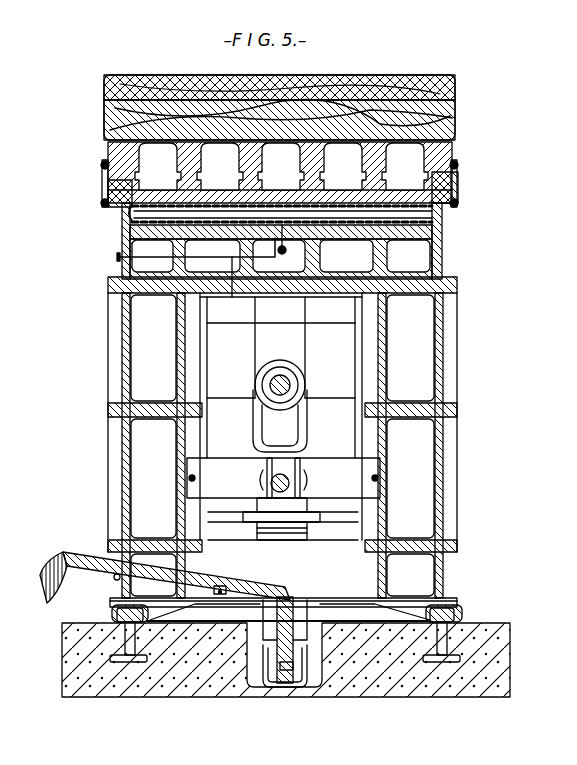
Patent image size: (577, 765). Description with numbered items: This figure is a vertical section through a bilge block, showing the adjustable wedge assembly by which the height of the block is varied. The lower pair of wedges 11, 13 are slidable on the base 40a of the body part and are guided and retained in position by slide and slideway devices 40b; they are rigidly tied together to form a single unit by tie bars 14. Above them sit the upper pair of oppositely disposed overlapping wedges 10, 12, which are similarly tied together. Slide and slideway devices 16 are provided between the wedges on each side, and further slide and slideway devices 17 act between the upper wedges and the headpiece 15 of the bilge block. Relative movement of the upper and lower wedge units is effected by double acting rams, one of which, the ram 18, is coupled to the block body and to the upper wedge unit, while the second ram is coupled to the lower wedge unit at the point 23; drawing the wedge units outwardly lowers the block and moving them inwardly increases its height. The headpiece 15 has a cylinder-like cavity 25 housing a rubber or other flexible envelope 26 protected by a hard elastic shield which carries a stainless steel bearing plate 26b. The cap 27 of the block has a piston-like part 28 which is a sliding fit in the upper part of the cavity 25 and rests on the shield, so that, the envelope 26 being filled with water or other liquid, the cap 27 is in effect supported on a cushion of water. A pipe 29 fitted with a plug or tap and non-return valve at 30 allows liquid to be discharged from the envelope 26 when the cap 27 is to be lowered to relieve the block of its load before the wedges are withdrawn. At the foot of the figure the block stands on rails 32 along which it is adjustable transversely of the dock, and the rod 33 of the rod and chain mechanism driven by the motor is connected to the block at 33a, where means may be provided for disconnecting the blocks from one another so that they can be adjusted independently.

The cap 27 is at (322, 122).
The piston-like part 28 is at (392, 193).
The stainless steel bearing plate 26b is at (333, 193).
The flexible envelope 26 is at (130, 217).
The cavity 25 is at (432, 228).
The headpiece 15 is at (432, 250).
The plug or tap and non-return valve 30 is at (118, 258).
The pipe 29 is at (251, 269).
The slide and slideway device 17 is at (405, 287).
The upper wedge 10 is at (123, 343).
The upper wedge 12 is at (440, 343).
The lower wedge 11 is at (125, 474).
The lower wedge 13 is at (438, 481).
The slide and slideway device 16 is at (403, 412).
The tie bars 14 is at (323, 463).
The double acting ram 18 is at (303, 380).
The coupling of ram to lower wedge unit 23 is at (291, 491).
The slide and slideway devices 40b is at (408, 535).
The base 40a is at (443, 551).
The rails 32 is at (130, 660).
The rod mechanism 33 is at (293, 687).
The rod connection 33a is at (271, 650).